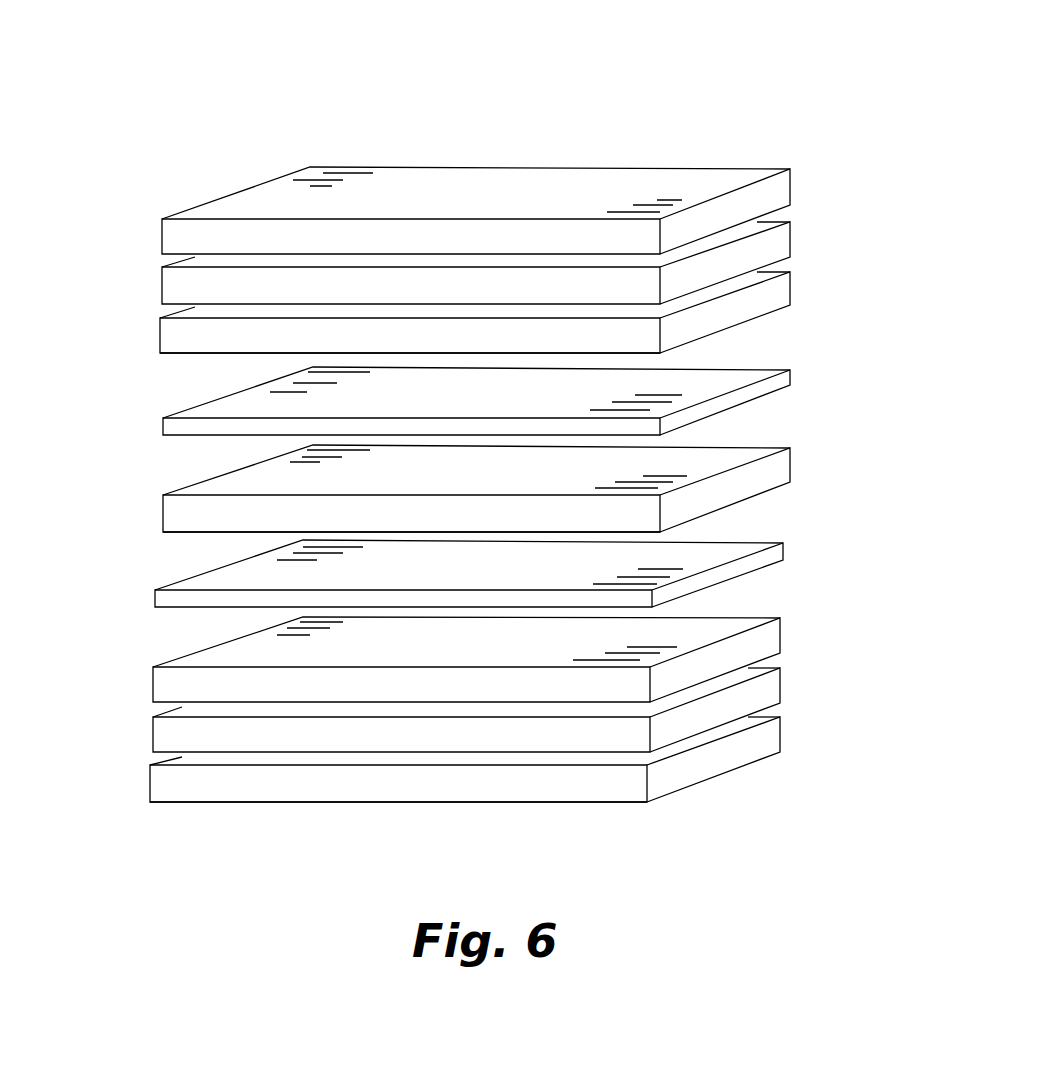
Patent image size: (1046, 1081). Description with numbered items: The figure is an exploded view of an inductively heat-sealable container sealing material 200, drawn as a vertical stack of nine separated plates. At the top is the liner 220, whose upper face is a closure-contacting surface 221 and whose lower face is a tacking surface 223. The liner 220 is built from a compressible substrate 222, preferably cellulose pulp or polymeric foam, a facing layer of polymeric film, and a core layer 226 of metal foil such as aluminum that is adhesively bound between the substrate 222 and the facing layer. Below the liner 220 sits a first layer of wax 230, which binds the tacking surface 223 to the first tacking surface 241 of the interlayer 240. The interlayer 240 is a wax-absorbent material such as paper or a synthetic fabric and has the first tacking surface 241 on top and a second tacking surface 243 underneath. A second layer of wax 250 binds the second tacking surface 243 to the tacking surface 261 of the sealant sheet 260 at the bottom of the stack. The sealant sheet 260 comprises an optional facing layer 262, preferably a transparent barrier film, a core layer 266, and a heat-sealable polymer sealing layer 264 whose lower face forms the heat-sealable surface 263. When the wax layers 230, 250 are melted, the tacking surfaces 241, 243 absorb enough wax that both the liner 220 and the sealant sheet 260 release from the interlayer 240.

The container sealing material 200 is at (569, 84).
The liner 220 is at (110, 162).
The closure-contacting surface 221 is at (230, 207).
The compressible substrate 222 is at (514, 205).
The tacking surface 223 is at (188, 354).
The core layer 226 is at (781, 246).
The first layer of wax 230 is at (163, 422).
The interlayer 240 is at (416, 509).
The first tacking surface 241 is at (208, 487).
The second tacking surface 243 is at (193, 533).
The second layer of wax 250 is at (163, 600).
The sealant sheet 260 is at (108, 642).
The tacking surface 261 is at (228, 652).
The facing layer 262 is at (494, 658).
The heat-sealable surface 263 is at (333, 803).
The sealing layer 264 is at (501, 570).
The core layer 266 is at (771, 693).